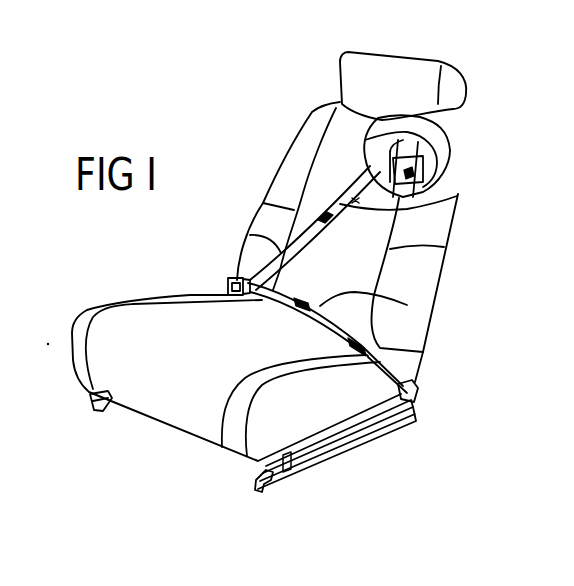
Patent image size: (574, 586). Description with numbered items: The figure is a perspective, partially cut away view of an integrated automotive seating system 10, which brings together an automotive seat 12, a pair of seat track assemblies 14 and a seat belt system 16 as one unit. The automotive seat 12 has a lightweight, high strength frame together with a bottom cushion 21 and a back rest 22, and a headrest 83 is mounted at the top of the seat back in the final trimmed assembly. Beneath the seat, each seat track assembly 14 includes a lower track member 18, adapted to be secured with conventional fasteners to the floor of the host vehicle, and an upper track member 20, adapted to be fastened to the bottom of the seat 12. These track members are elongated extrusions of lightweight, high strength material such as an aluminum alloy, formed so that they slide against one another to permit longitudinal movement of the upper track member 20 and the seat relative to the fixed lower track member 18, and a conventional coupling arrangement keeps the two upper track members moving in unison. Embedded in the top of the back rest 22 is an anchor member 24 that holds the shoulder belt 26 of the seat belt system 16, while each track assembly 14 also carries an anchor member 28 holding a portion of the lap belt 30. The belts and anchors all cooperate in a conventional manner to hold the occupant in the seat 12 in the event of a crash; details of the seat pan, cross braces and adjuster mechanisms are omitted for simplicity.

The integrated automotive seating system 10 is at (230, 167).
The automotive seat 12 is at (450, 222).
The seat track assemblies 14 is at (88, 398).
The seat belt system 16 is at (250, 235).
The lower track member 18 is at (307, 468).
The upper track member 20 is at (377, 421).
The bottom cushion 21 is at (132, 327).
The back rest 22 is at (317, 115).
The anchor member 24 is at (413, 118).
The shoulder belt 26 is at (448, 188).
The anchor member 28 is at (407, 390).
The lap belt 30 is at (407, 305).
The headrest 83 is at (418, 72).